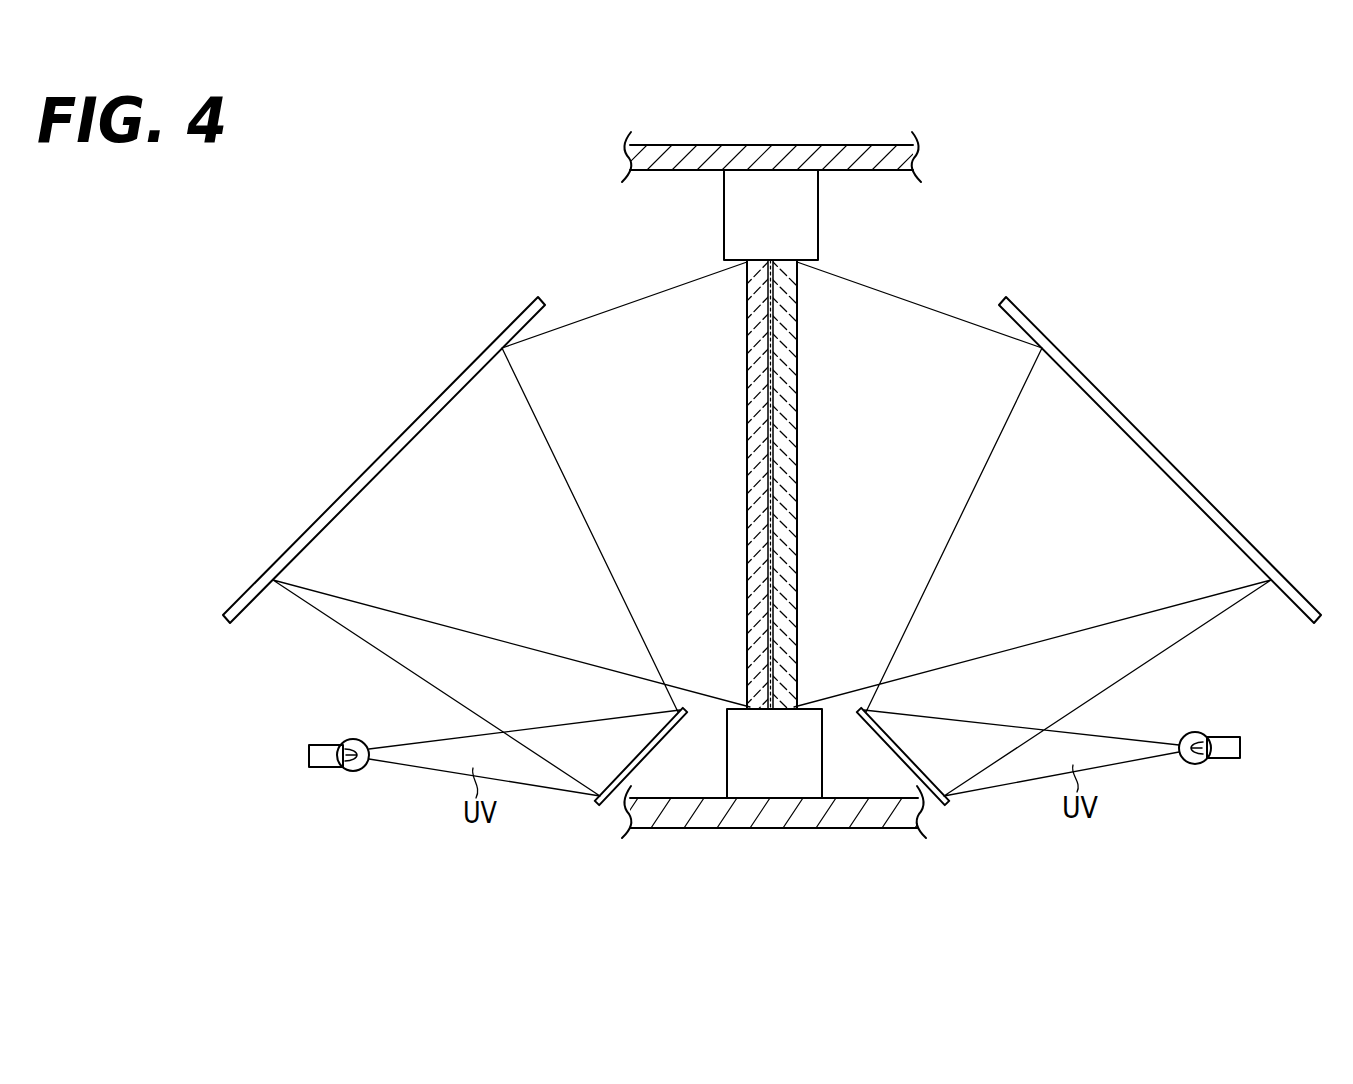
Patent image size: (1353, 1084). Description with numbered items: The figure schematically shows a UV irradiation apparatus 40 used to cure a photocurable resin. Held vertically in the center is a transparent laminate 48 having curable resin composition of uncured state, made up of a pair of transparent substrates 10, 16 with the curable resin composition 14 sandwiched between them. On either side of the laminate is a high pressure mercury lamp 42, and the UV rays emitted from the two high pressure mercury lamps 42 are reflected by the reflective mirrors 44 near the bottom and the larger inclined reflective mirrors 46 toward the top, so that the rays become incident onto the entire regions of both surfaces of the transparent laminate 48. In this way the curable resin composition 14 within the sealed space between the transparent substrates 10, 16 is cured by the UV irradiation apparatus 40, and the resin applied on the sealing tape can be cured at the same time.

The transparent substrate 10 is at (747, 345).
The curable resin composition 14 is at (772, 317).
The transparent substrate 16 is at (798, 420).
The transparent laminate having curable resin composition of uncured state 48 is at (797, 368).
The UV irradiation apparatus 40 is at (1000, 236).
The high pressure mercury lamp 42 is at (355, 739).
The reflective mirror 44 is at (607, 806).
The reflective mirror 46 is at (455, 378).